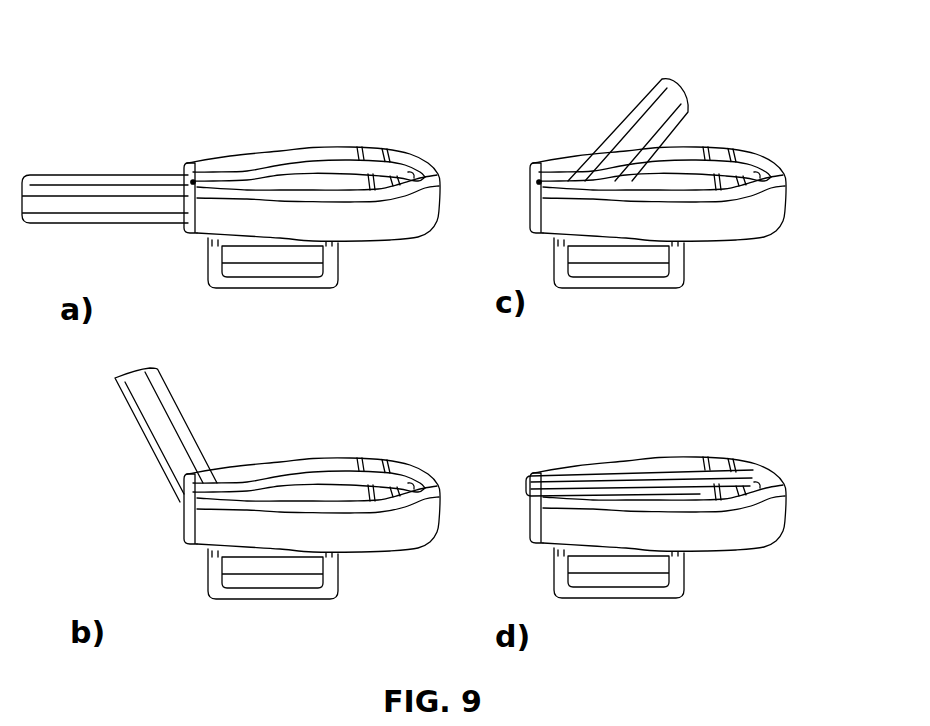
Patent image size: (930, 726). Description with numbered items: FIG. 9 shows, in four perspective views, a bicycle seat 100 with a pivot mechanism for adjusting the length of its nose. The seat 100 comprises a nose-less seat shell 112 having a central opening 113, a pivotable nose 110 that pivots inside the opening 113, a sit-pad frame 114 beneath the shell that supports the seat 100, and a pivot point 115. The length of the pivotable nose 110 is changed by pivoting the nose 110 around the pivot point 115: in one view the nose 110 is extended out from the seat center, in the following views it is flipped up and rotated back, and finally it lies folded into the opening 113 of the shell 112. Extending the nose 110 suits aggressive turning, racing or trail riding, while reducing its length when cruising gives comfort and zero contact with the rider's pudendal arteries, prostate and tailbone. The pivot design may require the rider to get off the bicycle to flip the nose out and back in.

The bicycle seat 100 is at (386, 133).
The pivotable nose 110 is at (57, 190).
The nose-less seat shell 112 is at (280, 157).
The central opening 113 is at (510, 195).
The sit-pad frame 114 is at (205, 240).
The pivot point 115 is at (193, 182).